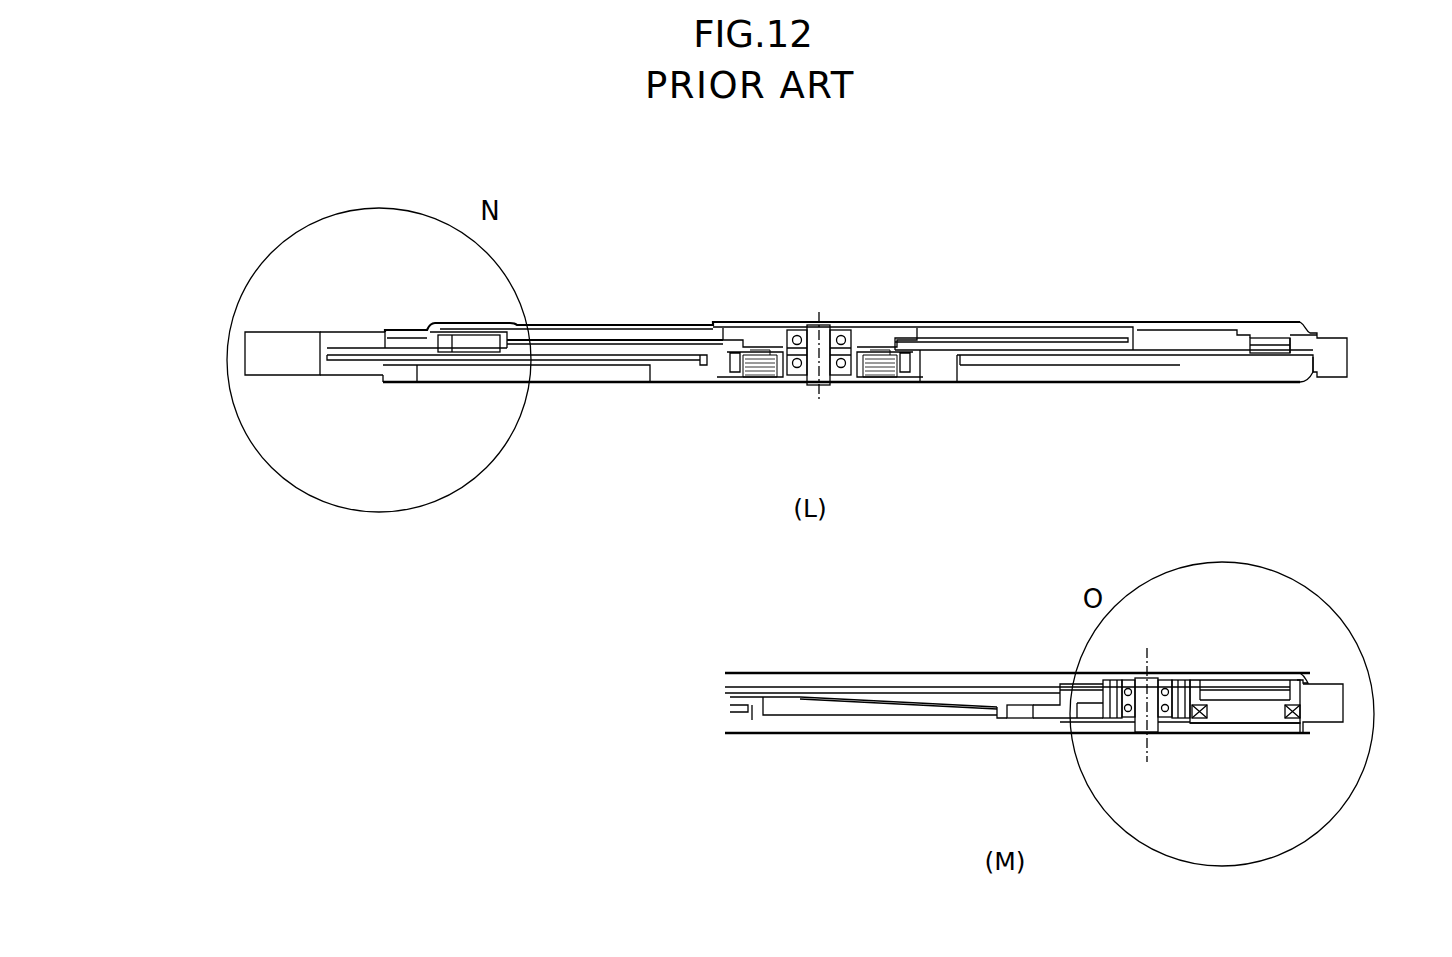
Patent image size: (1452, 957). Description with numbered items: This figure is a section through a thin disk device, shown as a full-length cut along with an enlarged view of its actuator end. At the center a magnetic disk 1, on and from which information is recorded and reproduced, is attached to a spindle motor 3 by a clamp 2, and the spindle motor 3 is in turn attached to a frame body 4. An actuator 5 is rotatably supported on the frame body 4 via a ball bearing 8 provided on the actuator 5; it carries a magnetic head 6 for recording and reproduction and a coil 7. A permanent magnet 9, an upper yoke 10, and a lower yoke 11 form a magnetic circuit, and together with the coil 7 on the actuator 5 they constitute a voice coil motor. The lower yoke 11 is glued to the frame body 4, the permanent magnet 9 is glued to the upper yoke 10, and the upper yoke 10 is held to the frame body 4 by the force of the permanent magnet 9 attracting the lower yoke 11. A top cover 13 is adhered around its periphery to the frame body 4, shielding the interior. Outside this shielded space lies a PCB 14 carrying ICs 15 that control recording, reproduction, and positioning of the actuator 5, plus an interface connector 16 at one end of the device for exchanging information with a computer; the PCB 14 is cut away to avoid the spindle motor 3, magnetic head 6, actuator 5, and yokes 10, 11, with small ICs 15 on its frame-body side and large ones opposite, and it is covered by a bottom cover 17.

The magnetic disk 1 is at (628, 328).
The clamp 2 is at (742, 328).
The spindle motor 3 is at (824, 386).
The frame body 4 is at (1338, 358).
The actuator 5 is at (1077, 710).
The magnetic head 6 is at (805, 700).
The coil 7 is at (1203, 718).
The ball bearing 8 is at (1165, 690).
The permanent magnet 9 is at (1207, 697).
The upper yoke 10 is at (1242, 683).
The lower yoke 11 is at (1245, 723).
The top cover 13 is at (1300, 323).
The PCB 14 is at (662, 357).
The ICs 15 is at (462, 345).
The interface connector 16 is at (278, 350).
The bottom cover 17 is at (1300, 387).